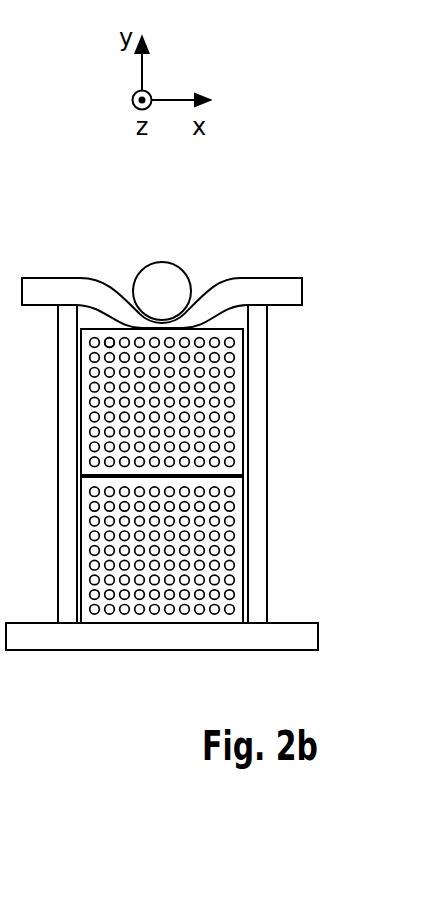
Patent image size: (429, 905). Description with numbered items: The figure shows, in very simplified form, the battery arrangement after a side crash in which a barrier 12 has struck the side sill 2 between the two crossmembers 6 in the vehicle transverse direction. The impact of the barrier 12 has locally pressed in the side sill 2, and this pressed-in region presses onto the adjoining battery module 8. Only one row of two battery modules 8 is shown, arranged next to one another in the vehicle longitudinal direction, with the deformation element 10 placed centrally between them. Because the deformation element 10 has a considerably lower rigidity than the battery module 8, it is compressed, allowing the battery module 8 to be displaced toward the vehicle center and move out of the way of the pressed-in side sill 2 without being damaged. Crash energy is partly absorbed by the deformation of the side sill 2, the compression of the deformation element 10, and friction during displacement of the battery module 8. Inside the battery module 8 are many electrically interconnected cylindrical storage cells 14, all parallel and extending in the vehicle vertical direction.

The side sill 2 is at (237, 284).
The crossmember 6 is at (66, 377).
The battery module 8 is at (243, 446).
The deformation element 10 is at (79, 477).
The barrier 12 is at (162, 278).
The storage cell 14 is at (112, 341).